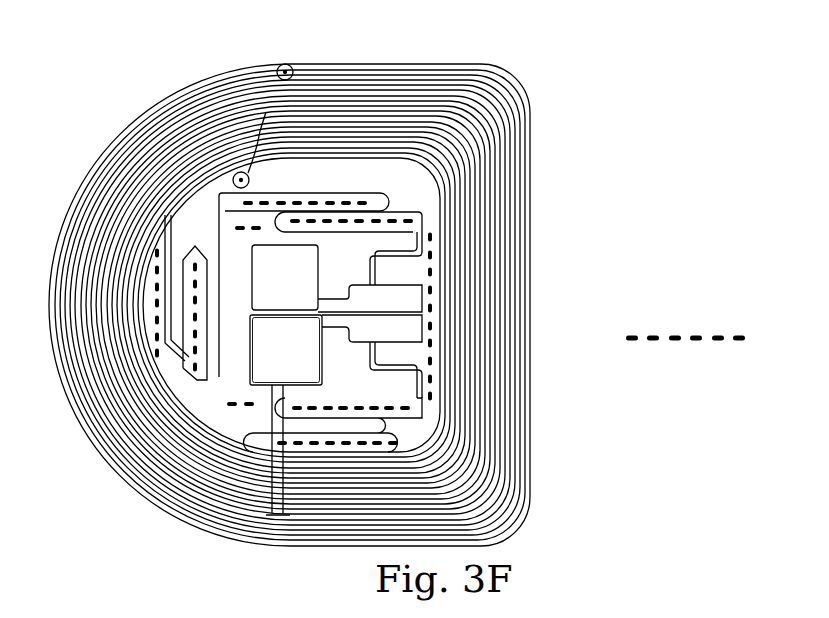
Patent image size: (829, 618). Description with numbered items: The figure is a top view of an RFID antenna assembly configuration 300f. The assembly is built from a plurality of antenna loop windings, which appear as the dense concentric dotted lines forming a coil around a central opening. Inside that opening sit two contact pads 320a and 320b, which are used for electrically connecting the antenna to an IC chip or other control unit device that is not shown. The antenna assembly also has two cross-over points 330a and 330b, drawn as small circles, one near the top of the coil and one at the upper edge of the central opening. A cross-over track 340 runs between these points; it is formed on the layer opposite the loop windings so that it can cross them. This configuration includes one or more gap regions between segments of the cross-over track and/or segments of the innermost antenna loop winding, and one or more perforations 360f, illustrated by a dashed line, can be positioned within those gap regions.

The RFID antenna assembly configuration 300f is at (392, 182).
The contact pad 320a is at (337, 278).
The contact pad 320b is at (336, 356).
The cross-over point 330a is at (249, 177).
The cross-over point 330b is at (279, 67).
The cross-over track 340 is at (260, 131).
The perforation 360f is at (678, 322).